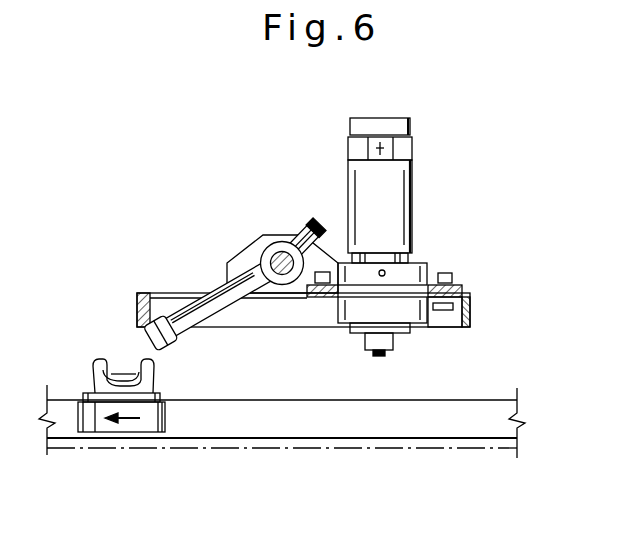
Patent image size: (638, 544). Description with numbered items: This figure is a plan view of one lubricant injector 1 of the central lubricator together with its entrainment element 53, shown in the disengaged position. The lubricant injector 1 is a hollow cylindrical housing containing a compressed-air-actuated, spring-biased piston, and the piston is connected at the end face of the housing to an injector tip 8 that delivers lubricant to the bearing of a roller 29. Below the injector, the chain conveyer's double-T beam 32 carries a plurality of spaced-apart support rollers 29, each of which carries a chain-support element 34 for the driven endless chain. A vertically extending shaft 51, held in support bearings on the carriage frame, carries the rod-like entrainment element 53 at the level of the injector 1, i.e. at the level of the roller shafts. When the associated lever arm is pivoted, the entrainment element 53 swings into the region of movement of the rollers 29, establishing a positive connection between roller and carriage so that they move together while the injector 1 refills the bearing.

The lubricant injector 1 is at (397, 201).
The injector tip 8 is at (394, 354).
The roller 29 is at (97, 415).
The double-T beam 32 is at (475, 407).
The chain-support element 34 is at (137, 373).
The vertically extending shaft 51 is at (275, 258).
The entrainment element 53 is at (197, 312).